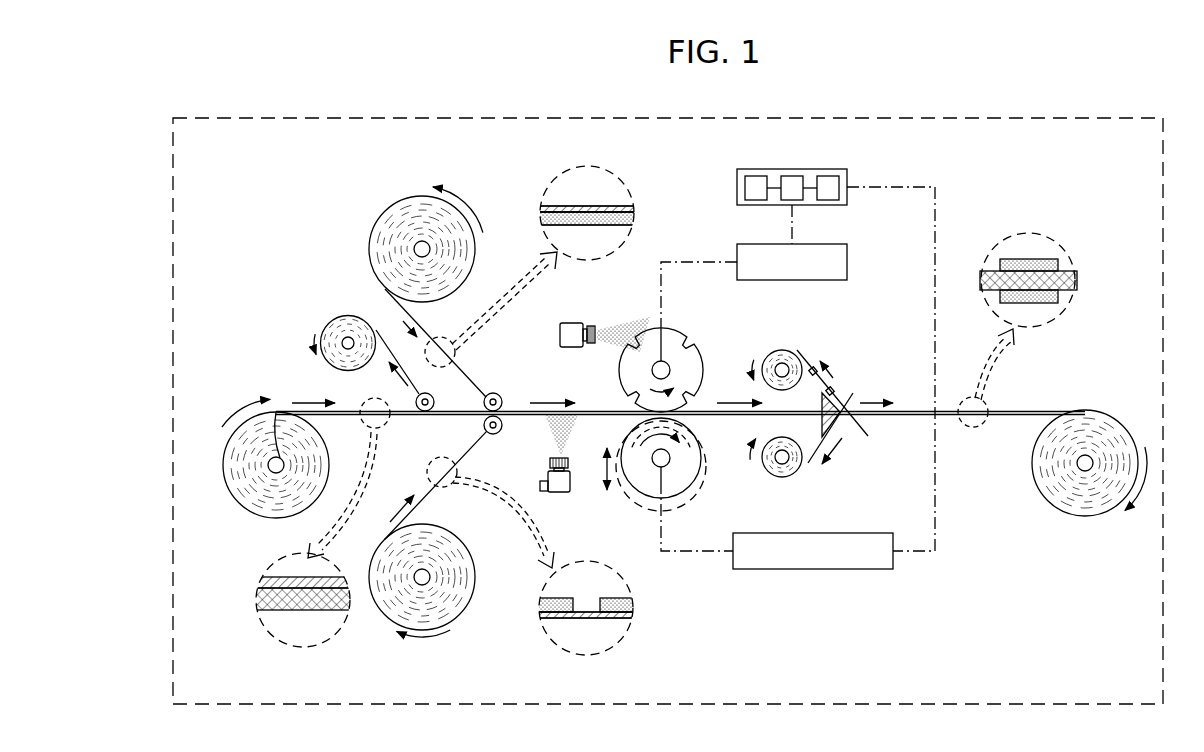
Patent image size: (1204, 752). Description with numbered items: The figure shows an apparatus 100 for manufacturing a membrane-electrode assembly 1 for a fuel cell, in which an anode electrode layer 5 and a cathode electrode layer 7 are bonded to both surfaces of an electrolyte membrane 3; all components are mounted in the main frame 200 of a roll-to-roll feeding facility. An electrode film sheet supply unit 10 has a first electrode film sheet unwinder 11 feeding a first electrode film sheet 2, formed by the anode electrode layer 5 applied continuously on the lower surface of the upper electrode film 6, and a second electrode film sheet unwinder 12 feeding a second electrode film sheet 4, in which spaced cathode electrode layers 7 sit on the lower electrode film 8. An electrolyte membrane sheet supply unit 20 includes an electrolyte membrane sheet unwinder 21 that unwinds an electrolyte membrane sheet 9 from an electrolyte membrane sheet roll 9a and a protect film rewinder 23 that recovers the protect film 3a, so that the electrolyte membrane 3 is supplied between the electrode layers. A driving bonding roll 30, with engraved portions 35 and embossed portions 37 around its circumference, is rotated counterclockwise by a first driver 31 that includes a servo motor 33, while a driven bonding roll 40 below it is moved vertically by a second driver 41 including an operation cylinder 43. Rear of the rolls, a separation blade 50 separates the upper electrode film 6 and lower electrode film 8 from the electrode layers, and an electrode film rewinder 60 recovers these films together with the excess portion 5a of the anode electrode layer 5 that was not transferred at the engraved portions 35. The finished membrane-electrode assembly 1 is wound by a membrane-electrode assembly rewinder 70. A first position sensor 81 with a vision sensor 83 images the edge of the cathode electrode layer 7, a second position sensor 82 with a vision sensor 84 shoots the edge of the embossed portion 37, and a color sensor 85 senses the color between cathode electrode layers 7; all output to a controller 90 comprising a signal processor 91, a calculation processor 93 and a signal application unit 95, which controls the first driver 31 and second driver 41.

The membrane-electrode assembly 1 is at (1036, 256).
The first electrode film sheet 2 is at (779, 250).
The electrolyte membrane 3 is at (404, 415).
The protect film 3a is at (380, 332).
The second electrode film sheet 4 is at (568, 630).
The anode electrode layer 5 is at (545, 222).
The excess portion 5a is at (834, 390).
The upper electrode film 6 is at (545, 208).
The cathode electrode layer 7 is at (632, 600).
The lower electrode film 8 is at (630, 618).
The electrolyte membrane sheet 9 is at (220, 577).
The electrolyte membrane sheet roll 9a is at (252, 508).
The electrode film sheet supply unit 10 is at (428, 402).
The first electrode film sheet unwinder 11 is at (415, 242).
The second electrode film sheet unwinder 12 is at (430, 578).
The electrolyte membrane sheet supply unit 20 is at (281, 421).
The electrolyte membrane sheet unwinder 21 is at (276, 458).
The protect film rewinder 23 is at (347, 338).
The driving bonding roll 30 is at (668, 343).
The first driver 31 is at (792, 266).
The servo motor 33 is at (775, 281).
The engraved portion 35 is at (633, 322).
The embossed portion 37 is at (648, 325).
The driven bonding roll 40 is at (702, 485).
The second driver 41 is at (777, 560).
The operation cylinder 43 is at (812, 570).
The separation blade 50 is at (843, 407).
The electrode film rewinder 60 is at (786, 368).
The membrane-electrode assembly rewinder 70 is at (1085, 471).
The first position sensor 81 is at (557, 477).
The second position sensor 82 is at (575, 321).
The vision sensor 83 is at (560, 492).
The vision sensor 84 is at (571, 323).
The color sensor 85 is at (541, 485).
The controller 90 is at (813, 340).
The signal processor 91 is at (756, 176).
The calculation processor 93 is at (792, 176).
The signal application unit 95 is at (828, 176).
The apparatus for manufacturing a membrane-electrode assembly 100 is at (635, 95).
The main frame 200 is at (1053, 118).